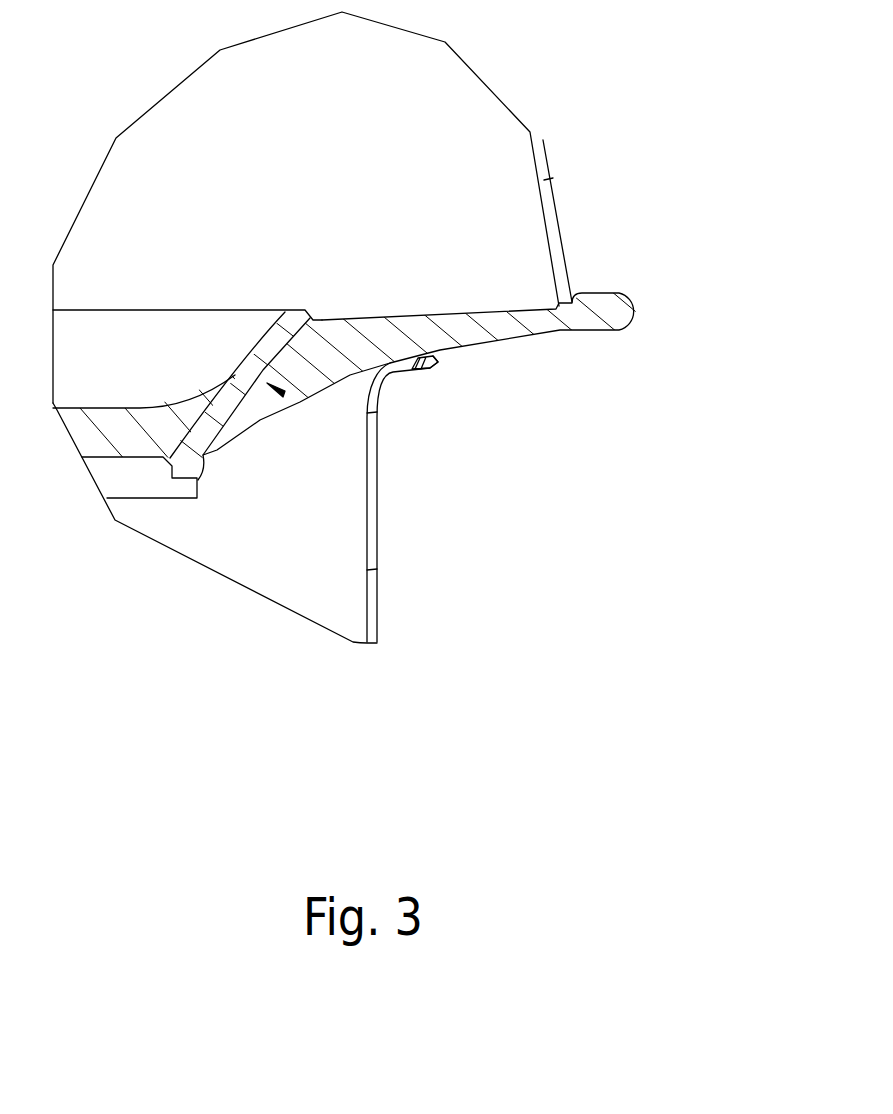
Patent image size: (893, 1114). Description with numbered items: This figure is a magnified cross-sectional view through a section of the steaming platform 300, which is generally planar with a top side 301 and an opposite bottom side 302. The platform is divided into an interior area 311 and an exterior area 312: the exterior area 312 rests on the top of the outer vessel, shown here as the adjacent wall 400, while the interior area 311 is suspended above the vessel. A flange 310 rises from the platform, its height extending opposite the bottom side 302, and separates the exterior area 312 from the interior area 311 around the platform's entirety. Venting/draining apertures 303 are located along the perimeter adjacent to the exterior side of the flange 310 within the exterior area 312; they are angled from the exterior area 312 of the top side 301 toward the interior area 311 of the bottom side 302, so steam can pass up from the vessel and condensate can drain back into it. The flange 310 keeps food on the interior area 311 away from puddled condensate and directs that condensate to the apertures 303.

The steaming platform 300 is at (620, 310).
The top side 301 is at (488, 318).
The bottom side 302 is at (200, 478).
The venting/draining apertures 303 is at (283, 395).
The flange 310 is at (293, 310).
The interior area 311 is at (207, 343).
The exterior area 312 is at (458, 327).
The helmet shell 400 is at (553, 185).